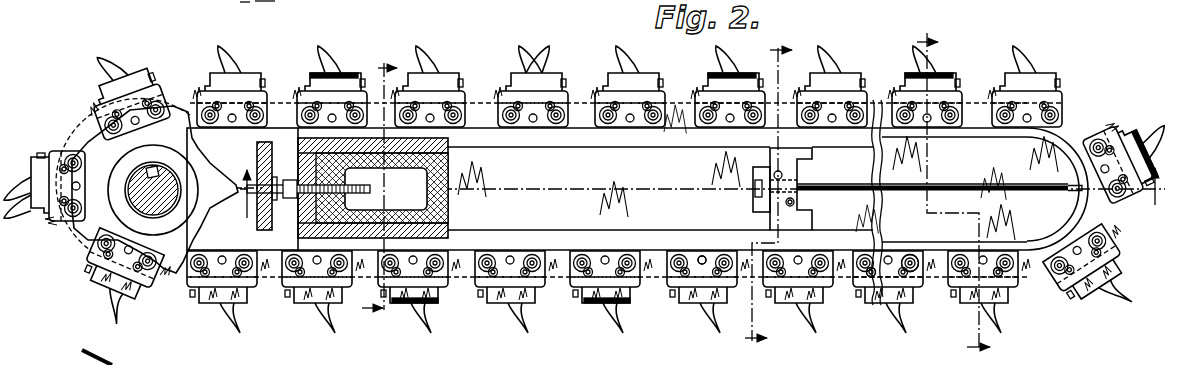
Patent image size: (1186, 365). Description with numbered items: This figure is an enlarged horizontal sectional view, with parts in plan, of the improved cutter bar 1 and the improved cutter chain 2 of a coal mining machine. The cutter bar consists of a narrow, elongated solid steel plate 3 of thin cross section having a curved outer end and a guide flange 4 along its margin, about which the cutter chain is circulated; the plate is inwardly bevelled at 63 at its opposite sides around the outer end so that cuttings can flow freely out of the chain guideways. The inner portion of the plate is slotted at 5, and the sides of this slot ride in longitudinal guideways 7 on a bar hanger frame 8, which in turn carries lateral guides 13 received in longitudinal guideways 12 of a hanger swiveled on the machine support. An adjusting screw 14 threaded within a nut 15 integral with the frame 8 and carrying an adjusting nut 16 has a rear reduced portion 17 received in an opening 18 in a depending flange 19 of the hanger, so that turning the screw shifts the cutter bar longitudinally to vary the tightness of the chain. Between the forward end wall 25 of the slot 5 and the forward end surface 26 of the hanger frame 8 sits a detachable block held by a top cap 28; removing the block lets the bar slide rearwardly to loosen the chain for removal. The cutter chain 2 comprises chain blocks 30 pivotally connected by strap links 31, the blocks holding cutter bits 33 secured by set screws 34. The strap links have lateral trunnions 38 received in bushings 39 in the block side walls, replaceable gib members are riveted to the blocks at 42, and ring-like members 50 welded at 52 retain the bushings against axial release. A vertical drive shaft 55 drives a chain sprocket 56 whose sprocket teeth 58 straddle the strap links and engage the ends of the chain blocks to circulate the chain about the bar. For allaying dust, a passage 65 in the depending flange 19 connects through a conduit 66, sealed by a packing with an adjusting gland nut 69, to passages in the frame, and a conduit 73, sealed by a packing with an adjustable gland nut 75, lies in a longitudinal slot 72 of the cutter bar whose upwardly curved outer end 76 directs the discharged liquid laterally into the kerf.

The cutter bar 1 is at (953, 146).
The cutter chain 2 is at (851, 72).
The plate 3 is at (1040, 286).
The guide flange 4 is at (1112, 116).
The slot 5 is at (781, 161).
The longitudinal guideways 7 is at (577, 147).
The bar hanger frame 8 is at (560, 300).
The longitudinal guideways 12 is at (450, 213).
The lateral guides 13 is at (435, 145).
The adjusting screw 14 is at (312, 172).
The nut 15 is at (290, 298).
The adjusting nut 16 is at (273, 140).
The reduced portion 17 is at (260, 150).
The opening 18 is at (272, 182).
The depending flange 19 is at (274, 288).
The forward end wall 25 is at (813, 173).
The forward end surface 26 is at (762, 208).
The top cap 28 is at (805, 206).
The chain blocks 30 is at (637, 80).
The strap links 31 is at (672, 105).
The cutter bits 33 is at (602, 312).
The set screws 34 is at (462, 76).
The lateral trunnions 38 is at (922, 260).
The bushings 39 is at (910, 258).
The rivet securing point 42 is at (703, 256).
The ring-like members 50 is at (965, 275).
The weld 52 is at (1002, 276).
The vertical drive shaft 55 is at (157, 168).
The chain sprocket 56 is at (95, 238).
The sprocket teeth 58 is at (95, 128).
The bevelled portions 63 is at (1053, 135).
The passage 65 is at (234, 9).
The conduit 66 is at (265, 6).
The adjusting gland nut 69 is at (174, 183).
The longitudinal slot 72 is at (950, 184).
The conduit 73 is at (990, 185).
The adjustable gland nut 75 is at (755, 192).
The upwardly curved outer end 76 is at (1075, 196).